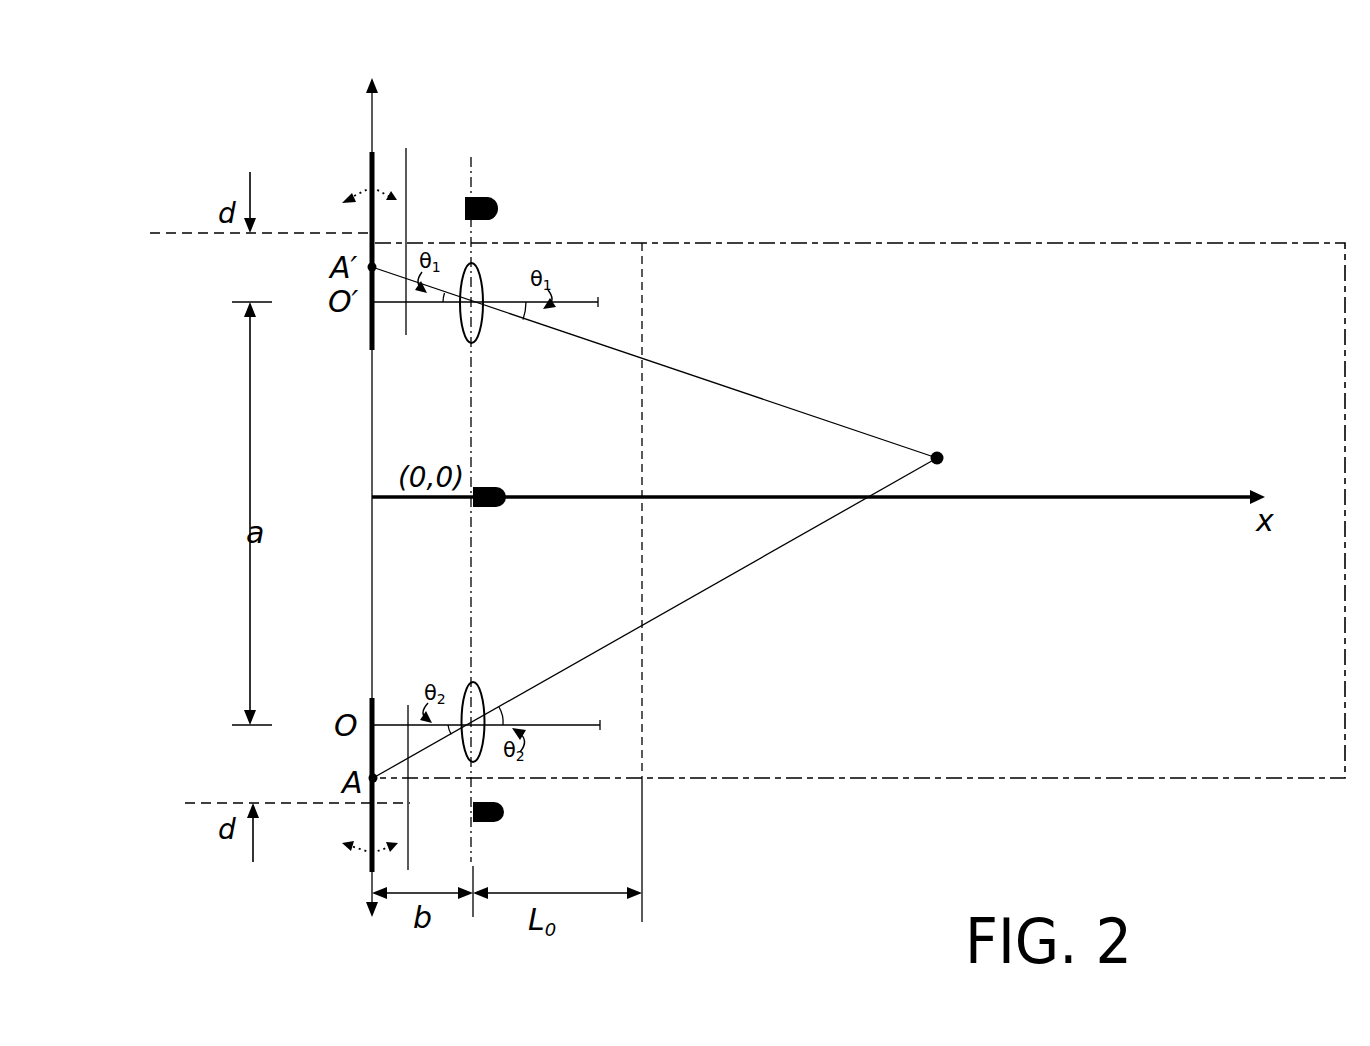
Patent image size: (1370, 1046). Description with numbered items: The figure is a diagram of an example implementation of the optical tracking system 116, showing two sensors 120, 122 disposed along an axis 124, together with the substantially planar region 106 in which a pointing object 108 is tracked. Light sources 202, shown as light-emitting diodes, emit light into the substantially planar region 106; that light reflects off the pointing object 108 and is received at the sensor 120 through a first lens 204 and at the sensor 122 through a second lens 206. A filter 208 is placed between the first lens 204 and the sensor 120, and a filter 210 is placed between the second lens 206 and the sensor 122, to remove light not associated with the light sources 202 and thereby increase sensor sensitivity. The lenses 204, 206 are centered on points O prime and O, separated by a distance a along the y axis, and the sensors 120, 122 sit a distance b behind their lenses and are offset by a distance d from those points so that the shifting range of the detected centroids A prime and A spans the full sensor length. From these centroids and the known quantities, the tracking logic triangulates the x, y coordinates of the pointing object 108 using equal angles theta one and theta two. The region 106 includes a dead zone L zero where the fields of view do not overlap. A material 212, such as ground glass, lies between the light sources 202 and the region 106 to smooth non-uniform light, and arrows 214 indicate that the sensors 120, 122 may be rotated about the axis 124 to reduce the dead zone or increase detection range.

The substantially planar region 106 is at (1102, 243).
The pointing object 108 is at (944, 452).
The optical tracking system 116 is at (630, 104).
The sensor 120 is at (372, 323).
The sensor 122 is at (372, 700).
The axis 124 is at (372, 130).
The light sources 202 is at (500, 490).
The first lens 204 is at (463, 338).
The second lens 206 is at (474, 684).
The filter 208 is at (405, 183).
The filter 210 is at (409, 846).
The material 212 is at (517, 118).
The arrows 214 is at (336, 184).